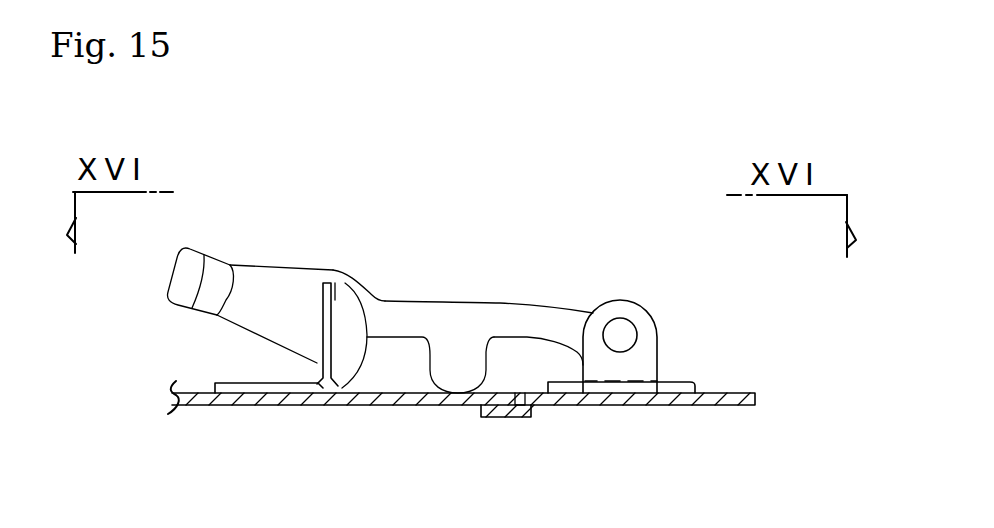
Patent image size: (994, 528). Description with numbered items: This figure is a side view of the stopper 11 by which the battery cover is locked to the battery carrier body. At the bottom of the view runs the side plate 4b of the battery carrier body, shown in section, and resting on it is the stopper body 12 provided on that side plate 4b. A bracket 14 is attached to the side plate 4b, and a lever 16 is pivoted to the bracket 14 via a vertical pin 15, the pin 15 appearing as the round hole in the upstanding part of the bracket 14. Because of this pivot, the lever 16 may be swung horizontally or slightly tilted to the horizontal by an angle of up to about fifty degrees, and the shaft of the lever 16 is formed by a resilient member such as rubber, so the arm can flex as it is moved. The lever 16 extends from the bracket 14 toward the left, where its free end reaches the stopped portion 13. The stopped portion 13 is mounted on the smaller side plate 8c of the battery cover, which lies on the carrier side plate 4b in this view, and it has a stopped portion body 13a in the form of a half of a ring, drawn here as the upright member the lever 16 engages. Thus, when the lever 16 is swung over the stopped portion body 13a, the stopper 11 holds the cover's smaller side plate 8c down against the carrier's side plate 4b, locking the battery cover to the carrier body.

The stopper 11 is at (435, 264).
The stopper body 12 is at (480, 302).
The stopped portion 13 is at (307, 372).
The stopped portion body 13a is at (341, 304).
The bracket 14 is at (634, 370).
The vertical pin 15 is at (619, 331).
The lever 16 is at (543, 330).
The smaller side plate 8c is at (383, 399).
The side plate 4b is at (729, 406).